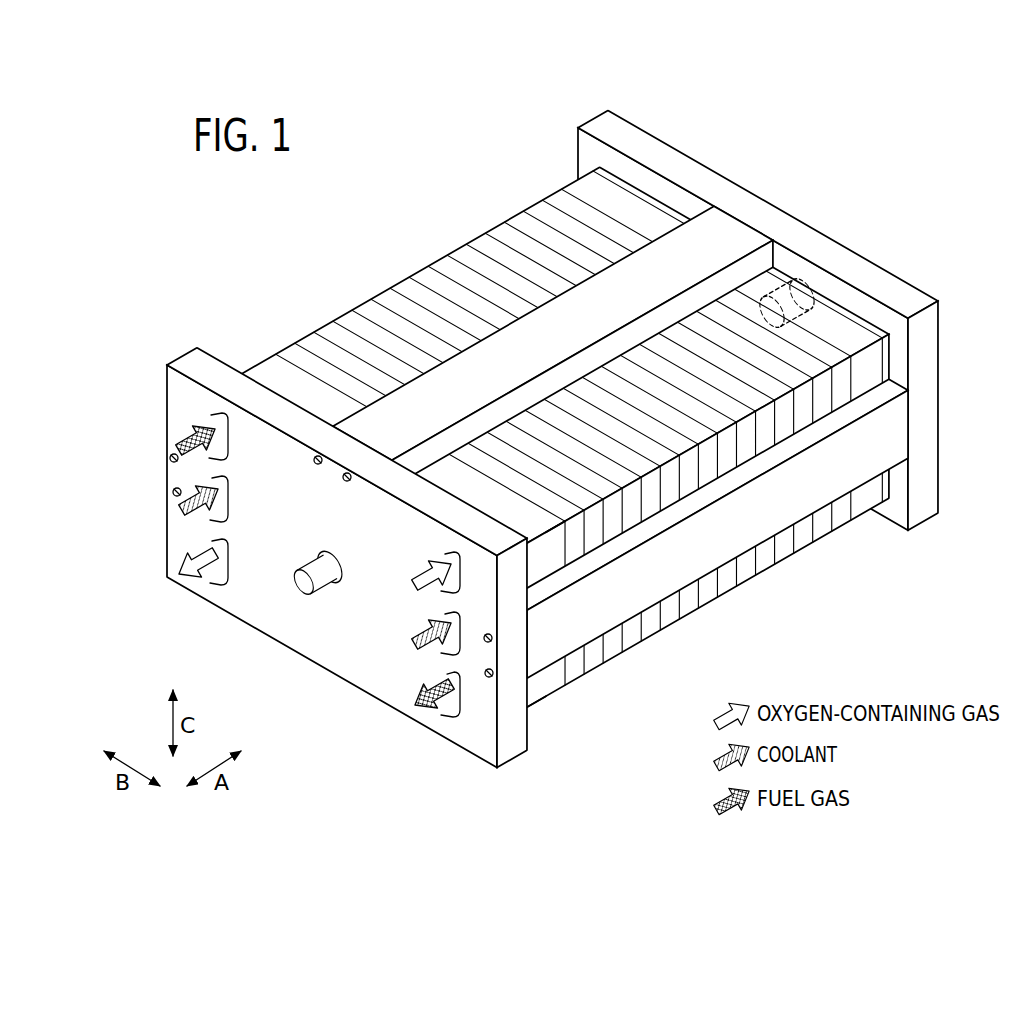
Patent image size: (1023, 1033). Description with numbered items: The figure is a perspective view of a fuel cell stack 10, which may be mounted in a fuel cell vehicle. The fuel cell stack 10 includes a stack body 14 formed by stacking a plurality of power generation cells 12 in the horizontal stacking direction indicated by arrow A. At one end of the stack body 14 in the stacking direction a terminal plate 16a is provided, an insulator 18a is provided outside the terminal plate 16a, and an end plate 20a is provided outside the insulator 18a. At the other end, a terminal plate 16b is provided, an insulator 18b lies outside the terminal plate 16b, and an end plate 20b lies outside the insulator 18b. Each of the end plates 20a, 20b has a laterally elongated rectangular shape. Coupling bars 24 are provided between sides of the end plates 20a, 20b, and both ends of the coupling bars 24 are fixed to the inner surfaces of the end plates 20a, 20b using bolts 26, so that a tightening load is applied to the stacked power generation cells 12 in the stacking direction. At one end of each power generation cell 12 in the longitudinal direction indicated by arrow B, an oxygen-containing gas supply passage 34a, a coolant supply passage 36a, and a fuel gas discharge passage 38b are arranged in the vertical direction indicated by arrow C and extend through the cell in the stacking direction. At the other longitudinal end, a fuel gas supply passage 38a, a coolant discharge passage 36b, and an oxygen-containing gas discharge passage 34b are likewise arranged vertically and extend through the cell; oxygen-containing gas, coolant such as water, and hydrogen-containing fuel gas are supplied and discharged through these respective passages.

The fuel cell stack 10 is at (272, 215).
The power generation cell 12 is at (455, 243).
The stack body 14 is at (554, 424).
The terminal plate 16a is at (540, 567).
The terminal plate 16b is at (632, 215).
The insulator 18a is at (545, 684).
The insulator 18b is at (618, 188).
The end plate 20a is at (199, 340).
The end plate 20b is at (915, 281).
The coupling bar 24 is at (727, 233).
The bolt 26 is at (325, 456).
The oxygen-containing gas supply passage 34a is at (437, 550).
The oxygen-containing gas discharge passage 34b is at (203, 543).
The coolant supply passage 36a is at (448, 648).
The coolant discharge passage 36b is at (205, 478).
The fuel gas supply passage 38a is at (200, 403).
The fuel gas discharge passage 38b is at (452, 710).